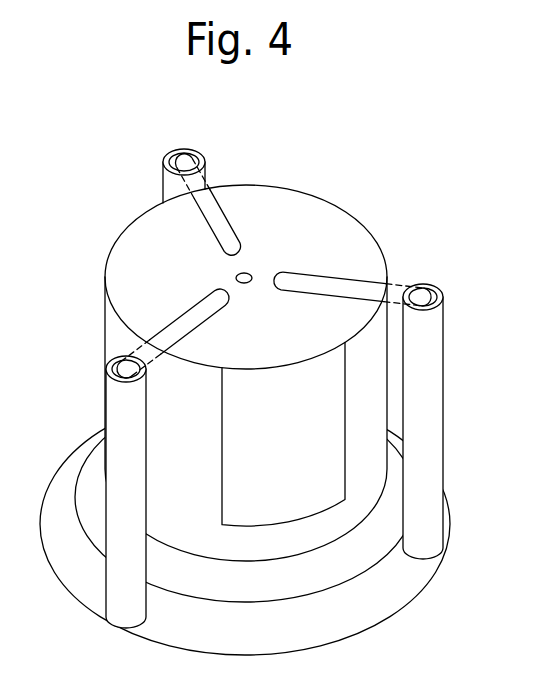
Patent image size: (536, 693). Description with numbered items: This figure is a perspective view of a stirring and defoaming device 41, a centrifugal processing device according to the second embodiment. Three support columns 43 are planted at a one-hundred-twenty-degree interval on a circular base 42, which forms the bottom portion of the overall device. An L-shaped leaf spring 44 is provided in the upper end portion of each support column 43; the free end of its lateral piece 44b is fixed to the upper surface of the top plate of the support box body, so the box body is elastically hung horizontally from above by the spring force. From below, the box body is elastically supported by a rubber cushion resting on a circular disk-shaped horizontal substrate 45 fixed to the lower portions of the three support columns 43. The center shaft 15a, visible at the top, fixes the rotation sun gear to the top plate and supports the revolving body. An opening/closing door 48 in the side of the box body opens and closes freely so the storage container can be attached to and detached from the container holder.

The stirring and defoaming device 41 is at (262, 349).
The circular base 42 is at (322, 637).
The support column 43 is at (168, 188).
The L-shaped leaf spring 44 is at (276, 252).
The lateral piece 44b is at (207, 216).
The circular disk-shaped horizontal substrate 45 is at (363, 555).
The opening/closing door 48 is at (230, 445).
The center shaft 15a is at (246, 272).